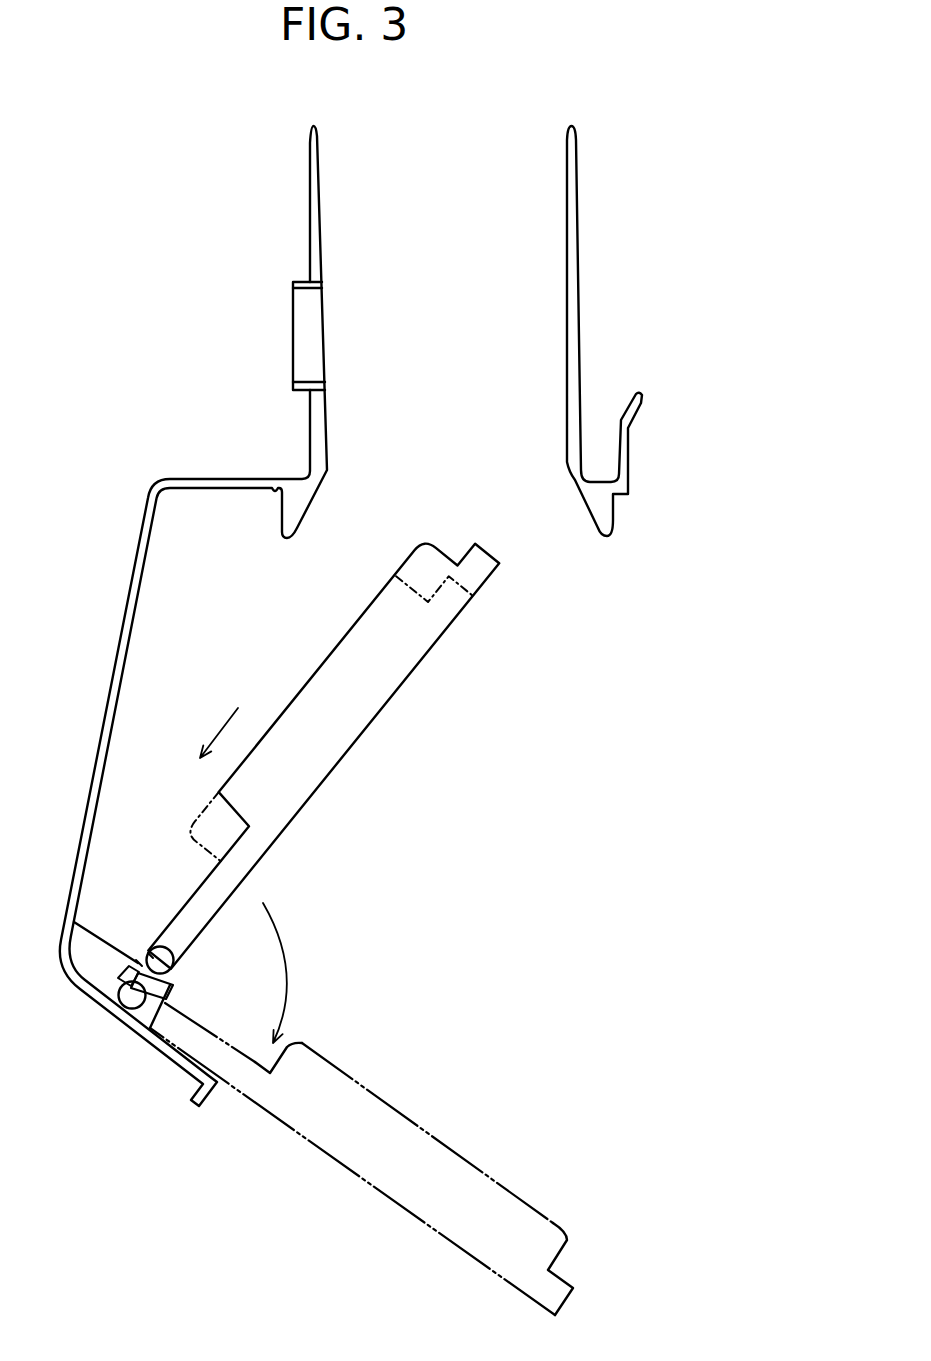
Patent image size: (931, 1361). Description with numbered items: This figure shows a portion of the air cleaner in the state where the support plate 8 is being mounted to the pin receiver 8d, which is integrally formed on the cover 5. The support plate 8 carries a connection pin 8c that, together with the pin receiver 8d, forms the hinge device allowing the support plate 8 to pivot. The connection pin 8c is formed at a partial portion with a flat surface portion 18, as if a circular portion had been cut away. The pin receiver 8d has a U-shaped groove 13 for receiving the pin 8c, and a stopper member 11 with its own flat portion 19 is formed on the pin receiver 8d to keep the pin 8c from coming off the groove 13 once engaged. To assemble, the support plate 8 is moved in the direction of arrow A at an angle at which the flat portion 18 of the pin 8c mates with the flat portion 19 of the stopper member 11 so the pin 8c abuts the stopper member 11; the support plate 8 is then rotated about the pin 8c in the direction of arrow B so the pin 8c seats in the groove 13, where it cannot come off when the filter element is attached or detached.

The cover 5 is at (264, 478).
The support plate 8 is at (297, 717).
The connection pin 8c is at (174, 963).
The pin receiver 8d is at (100, 950).
The stopper member 11 is at (135, 965).
The U-shaped groove 13 is at (170, 990).
The flat surface portion 18 is at (152, 957).
The flat portion 19 is at (138, 962).